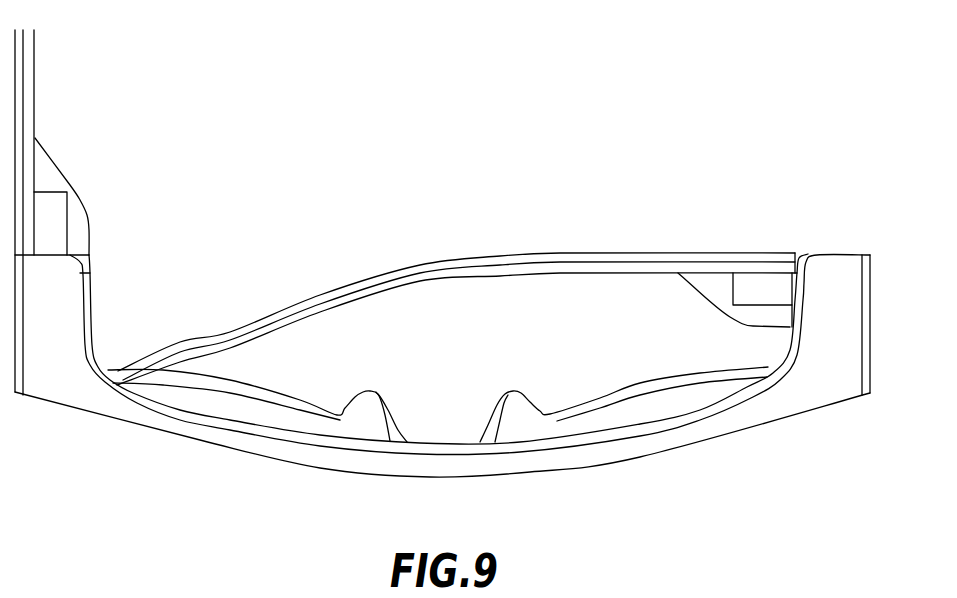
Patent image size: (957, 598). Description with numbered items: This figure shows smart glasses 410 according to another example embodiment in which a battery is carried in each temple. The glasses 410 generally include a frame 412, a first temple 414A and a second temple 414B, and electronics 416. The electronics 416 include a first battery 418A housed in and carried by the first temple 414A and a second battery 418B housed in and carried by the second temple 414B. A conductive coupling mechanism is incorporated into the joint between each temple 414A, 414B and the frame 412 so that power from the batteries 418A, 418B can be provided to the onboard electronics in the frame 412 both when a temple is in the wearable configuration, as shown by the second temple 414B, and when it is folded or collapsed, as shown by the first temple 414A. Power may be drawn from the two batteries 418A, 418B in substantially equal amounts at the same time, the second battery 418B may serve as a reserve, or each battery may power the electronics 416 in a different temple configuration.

The smart glasses 410 is at (631, 151).
The frame 412 is at (785, 400).
The first temple 414A is at (395, 268).
The second temple 414B is at (35, 88).
The electronics 416 is at (104, 215).
The first battery 418A is at (762, 280).
The second battery 418B is at (48, 207).